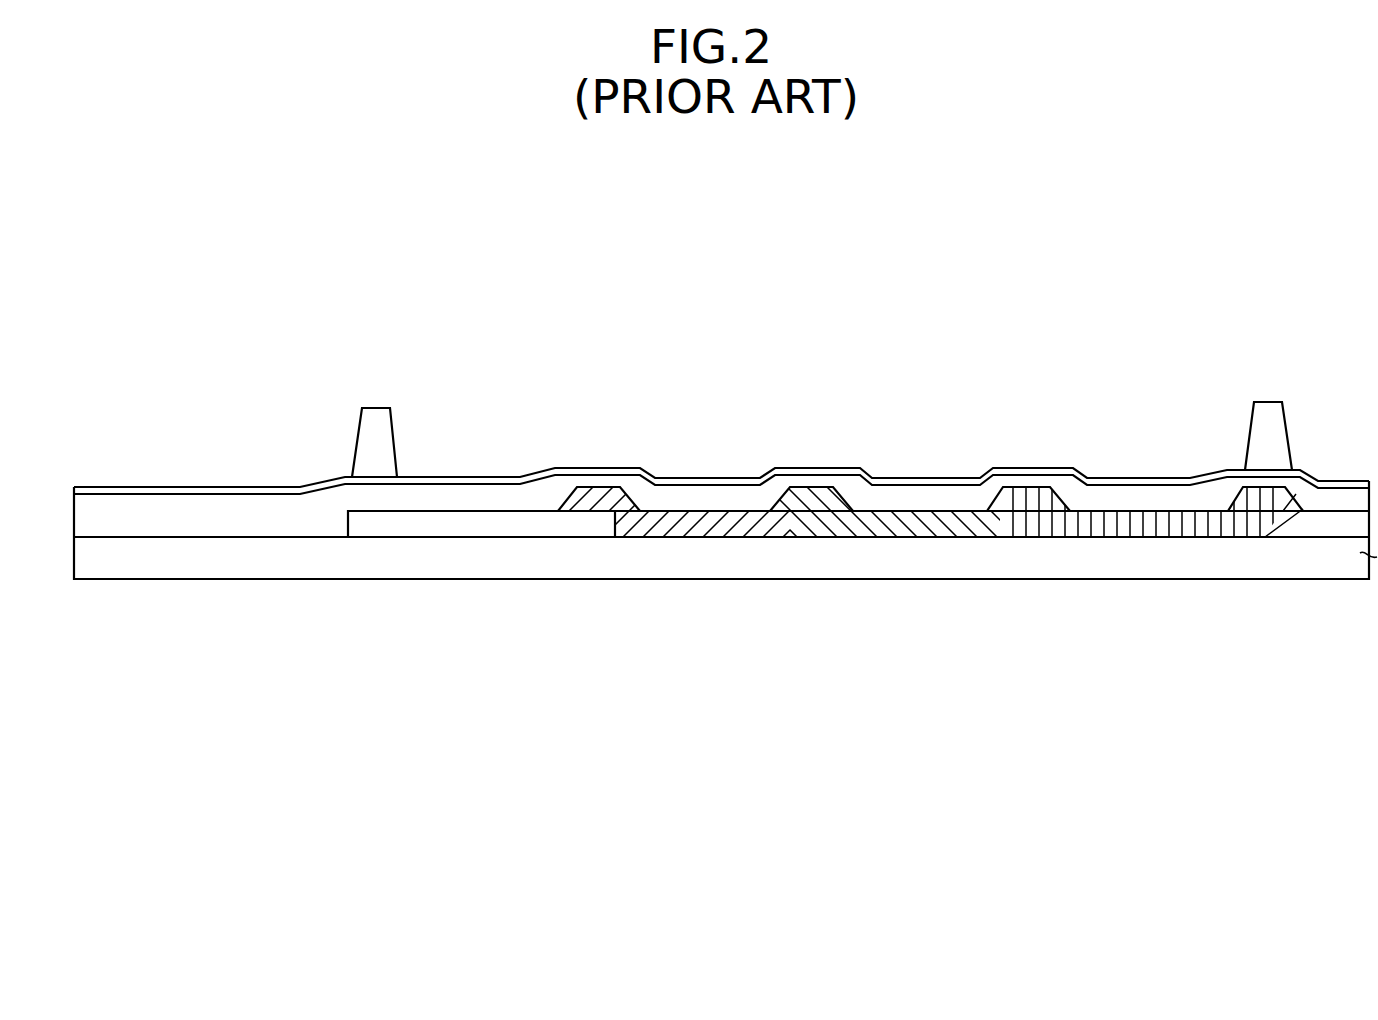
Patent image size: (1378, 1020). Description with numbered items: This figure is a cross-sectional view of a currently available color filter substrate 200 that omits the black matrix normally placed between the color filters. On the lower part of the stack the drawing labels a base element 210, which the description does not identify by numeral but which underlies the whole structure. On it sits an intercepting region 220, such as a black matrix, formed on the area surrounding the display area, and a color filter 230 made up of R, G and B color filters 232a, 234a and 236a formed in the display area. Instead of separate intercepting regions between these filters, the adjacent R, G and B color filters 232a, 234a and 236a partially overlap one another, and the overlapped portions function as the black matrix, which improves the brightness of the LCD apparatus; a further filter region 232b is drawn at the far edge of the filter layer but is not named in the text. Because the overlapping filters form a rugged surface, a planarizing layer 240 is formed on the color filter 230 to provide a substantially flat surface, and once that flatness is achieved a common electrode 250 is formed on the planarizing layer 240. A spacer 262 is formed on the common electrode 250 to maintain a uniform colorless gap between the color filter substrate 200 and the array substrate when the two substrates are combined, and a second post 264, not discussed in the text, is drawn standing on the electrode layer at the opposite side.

The color filter substrate 200 is at (742, 284).
The substrate 210 is at (163, 563).
The intercepting region 220 is at (453, 527).
The color filter 230 is at (948, 592).
The R color filter 232a is at (706, 523).
The G color filter 234a is at (922, 525).
The B color filter 236a is at (1148, 523).
The lightly doped region 232b is at (1292, 571).
The planarizing layer 240 is at (905, 497).
The common electrode 250 is at (1028, 470).
The spacer 262 is at (385, 447).
The drain electrode 264 is at (1260, 447).